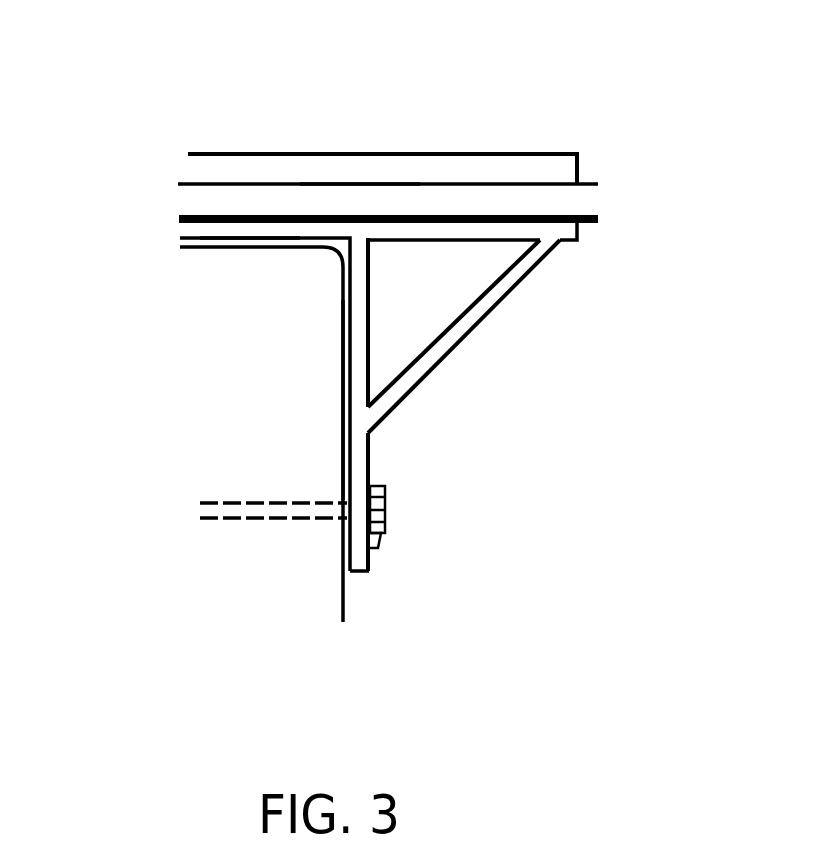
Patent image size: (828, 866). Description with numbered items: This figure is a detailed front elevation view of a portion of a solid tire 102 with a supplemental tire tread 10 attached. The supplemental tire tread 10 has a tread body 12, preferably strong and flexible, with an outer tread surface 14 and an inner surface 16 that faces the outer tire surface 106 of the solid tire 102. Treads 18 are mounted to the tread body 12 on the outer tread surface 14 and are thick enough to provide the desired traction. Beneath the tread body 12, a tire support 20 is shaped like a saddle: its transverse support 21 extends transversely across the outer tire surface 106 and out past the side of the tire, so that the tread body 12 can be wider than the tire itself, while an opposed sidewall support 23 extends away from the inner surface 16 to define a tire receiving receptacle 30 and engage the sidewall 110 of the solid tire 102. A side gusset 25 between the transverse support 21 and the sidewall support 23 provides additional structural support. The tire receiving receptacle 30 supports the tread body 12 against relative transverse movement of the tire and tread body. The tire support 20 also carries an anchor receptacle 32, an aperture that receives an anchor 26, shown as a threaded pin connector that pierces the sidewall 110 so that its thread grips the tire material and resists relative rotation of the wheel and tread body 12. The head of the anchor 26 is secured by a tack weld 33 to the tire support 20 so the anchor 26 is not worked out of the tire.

The supplemental tire tread 10 is at (460, 197).
The tread body 12 is at (276, 193).
The outer tread surface 14 is at (582, 182).
The inner surface 16 is at (580, 217).
The treads 18 is at (372, 160).
The tire support 20 is at (358, 443).
The transverse support 21 is at (460, 229).
The sidewall support 23 is at (360, 347).
The side gusset 25 is at (483, 313).
The anchor 26 is at (260, 510).
The tire receiving receptacle 30 is at (241, 405).
The anchor receptacle 32 is at (362, 511).
The tack weld 33 is at (378, 540).
The solid tire 102 is at (237, 305).
The outer tire surface 106 is at (180, 243).
The sidewall 110 is at (343, 585).